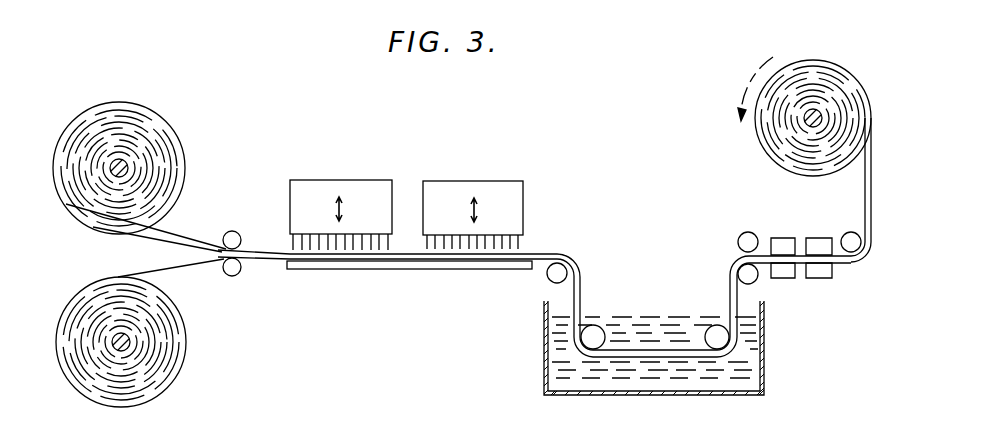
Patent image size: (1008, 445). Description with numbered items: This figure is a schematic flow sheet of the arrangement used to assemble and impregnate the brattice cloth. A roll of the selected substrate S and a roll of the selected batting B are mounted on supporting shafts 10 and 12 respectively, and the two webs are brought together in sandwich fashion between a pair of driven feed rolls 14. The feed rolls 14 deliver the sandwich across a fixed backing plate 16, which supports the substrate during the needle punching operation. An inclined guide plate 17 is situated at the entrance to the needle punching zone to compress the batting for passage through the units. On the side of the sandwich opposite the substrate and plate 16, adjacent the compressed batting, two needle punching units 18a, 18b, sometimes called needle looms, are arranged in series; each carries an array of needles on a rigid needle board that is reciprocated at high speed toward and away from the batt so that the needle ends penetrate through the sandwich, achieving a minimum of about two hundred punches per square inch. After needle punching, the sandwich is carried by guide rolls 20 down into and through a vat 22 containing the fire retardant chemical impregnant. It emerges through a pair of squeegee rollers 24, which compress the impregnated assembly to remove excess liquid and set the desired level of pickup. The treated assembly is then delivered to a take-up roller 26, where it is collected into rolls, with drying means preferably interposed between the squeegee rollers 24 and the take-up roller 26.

The supporting shaft 10 is at (129, 338).
The substrate S is at (186, 341).
The supporting shaft 12 is at (127, 166).
The batting B is at (180, 172).
The driven feed rolls 14 is at (233, 236).
The fixed backing plate 16 is at (398, 268).
The inclined guide plate 17 is at (291, 256).
The needle punching unit 18a is at (348, 200).
The needle punching unit 18b is at (485, 200).
The guide rolls 20 is at (560, 270).
The vat 22 is at (766, 345).
The squeegee rollers 24 is at (745, 234).
The take-up roller 26 is at (848, 92).